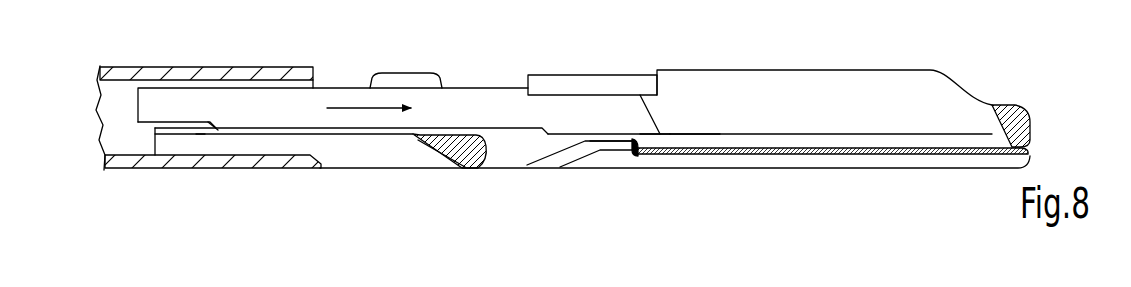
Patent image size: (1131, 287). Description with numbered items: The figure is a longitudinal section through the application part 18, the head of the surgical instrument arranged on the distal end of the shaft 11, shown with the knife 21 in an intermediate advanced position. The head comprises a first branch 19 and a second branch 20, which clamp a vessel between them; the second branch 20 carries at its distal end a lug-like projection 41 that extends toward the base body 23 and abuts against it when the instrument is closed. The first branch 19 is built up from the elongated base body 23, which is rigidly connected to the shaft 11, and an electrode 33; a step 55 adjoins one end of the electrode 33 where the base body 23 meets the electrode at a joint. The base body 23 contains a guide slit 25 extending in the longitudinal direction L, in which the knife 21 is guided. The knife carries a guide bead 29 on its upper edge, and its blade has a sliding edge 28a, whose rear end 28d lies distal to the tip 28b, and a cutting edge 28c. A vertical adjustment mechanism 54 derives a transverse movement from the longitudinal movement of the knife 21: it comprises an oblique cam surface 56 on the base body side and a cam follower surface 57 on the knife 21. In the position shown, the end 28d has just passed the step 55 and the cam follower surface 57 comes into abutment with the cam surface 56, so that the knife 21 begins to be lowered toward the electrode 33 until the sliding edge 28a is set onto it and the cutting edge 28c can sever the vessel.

The shaft 11 is at (213, 66).
The knife 21 is at (480, 106).
The cam surface 56 is at (212, 136).
The cam follower surface 57 is at (213, 124).
The vertical adjustment mechanism 54 is at (204, 134).
The longitudinal direction L is at (373, 108).
The guide slit 25 is at (512, 146).
The base body 23 is at (588, 152).
The step 55 is at (634, 156).
The guide bead 29 is at (580, 74).
The rear end of the sliding edge 28d is at (590, 75).
The second branch 20 is at (900, 69).
The cutting edge 28c is at (652, 108).
The sliding edge 28a is at (648, 136).
The tip 28b is at (690, 134).
The lug-like projection 41 is at (1033, 128).
The electrode 33 is at (795, 140).
The first branch 19 is at (916, 159).
The application part 18 is at (998, 66).